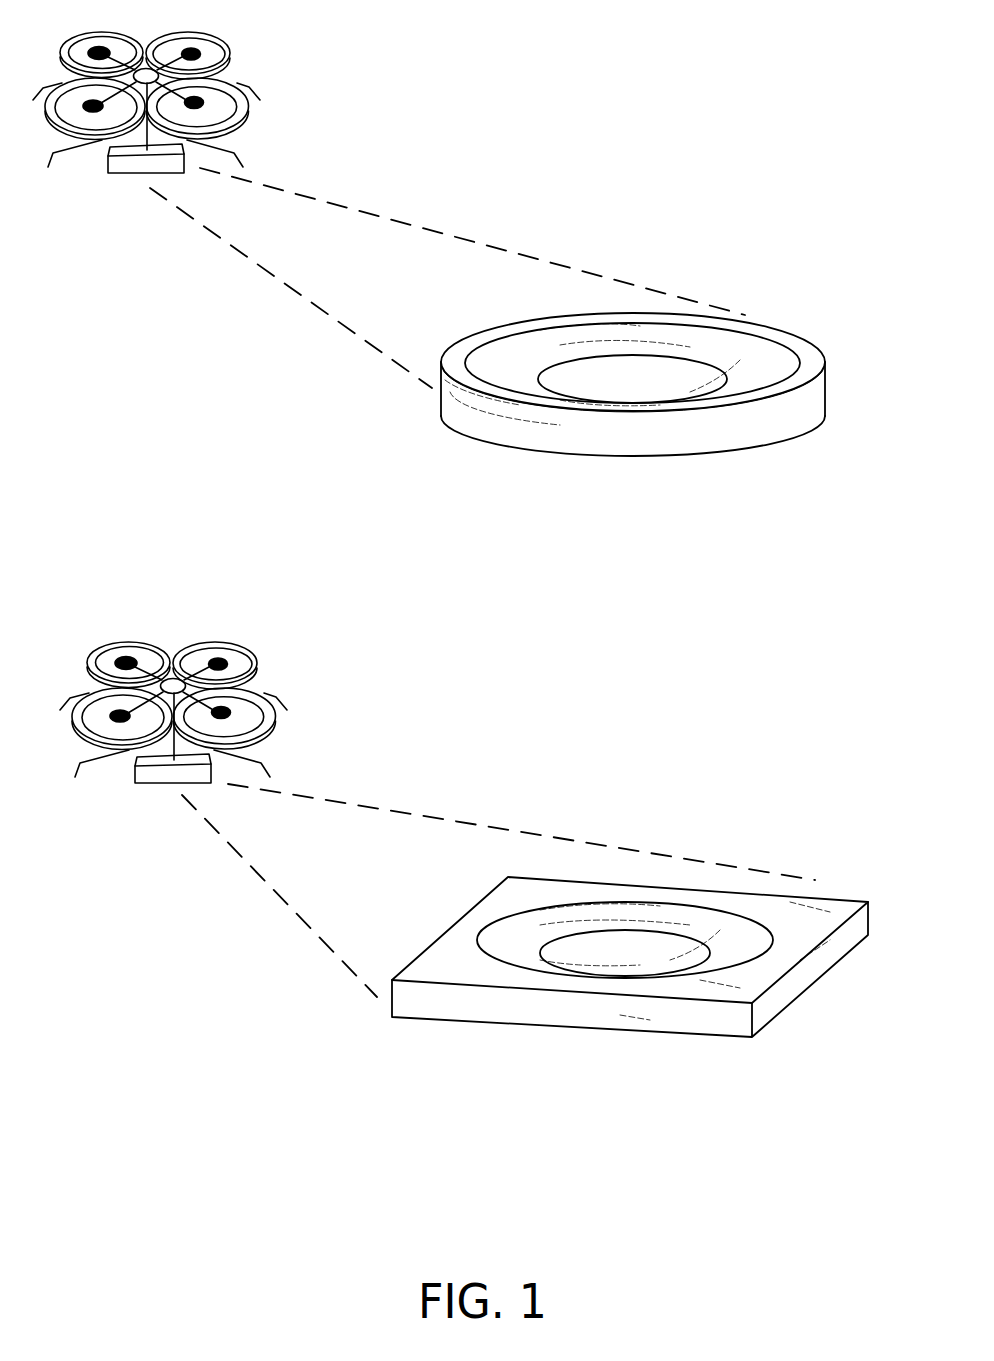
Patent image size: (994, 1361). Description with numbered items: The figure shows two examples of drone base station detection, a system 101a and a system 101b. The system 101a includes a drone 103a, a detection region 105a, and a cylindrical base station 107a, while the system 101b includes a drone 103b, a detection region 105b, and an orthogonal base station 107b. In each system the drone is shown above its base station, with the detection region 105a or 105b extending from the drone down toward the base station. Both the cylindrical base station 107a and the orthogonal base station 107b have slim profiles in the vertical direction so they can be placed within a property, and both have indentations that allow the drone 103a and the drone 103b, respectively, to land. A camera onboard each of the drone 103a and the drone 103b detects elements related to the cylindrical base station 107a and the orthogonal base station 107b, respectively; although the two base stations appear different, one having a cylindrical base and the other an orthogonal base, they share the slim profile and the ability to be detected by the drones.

The system 101a is at (645, 63).
The system 101b is at (680, 642).
The drone 103a is at (191, 35).
The drone 103b is at (229, 647).
The detection region 105a is at (420, 238).
The detection region 105b is at (430, 830).
The cylindrical base station 107a is at (782, 338).
The orthogonal base station 107b is at (842, 907).